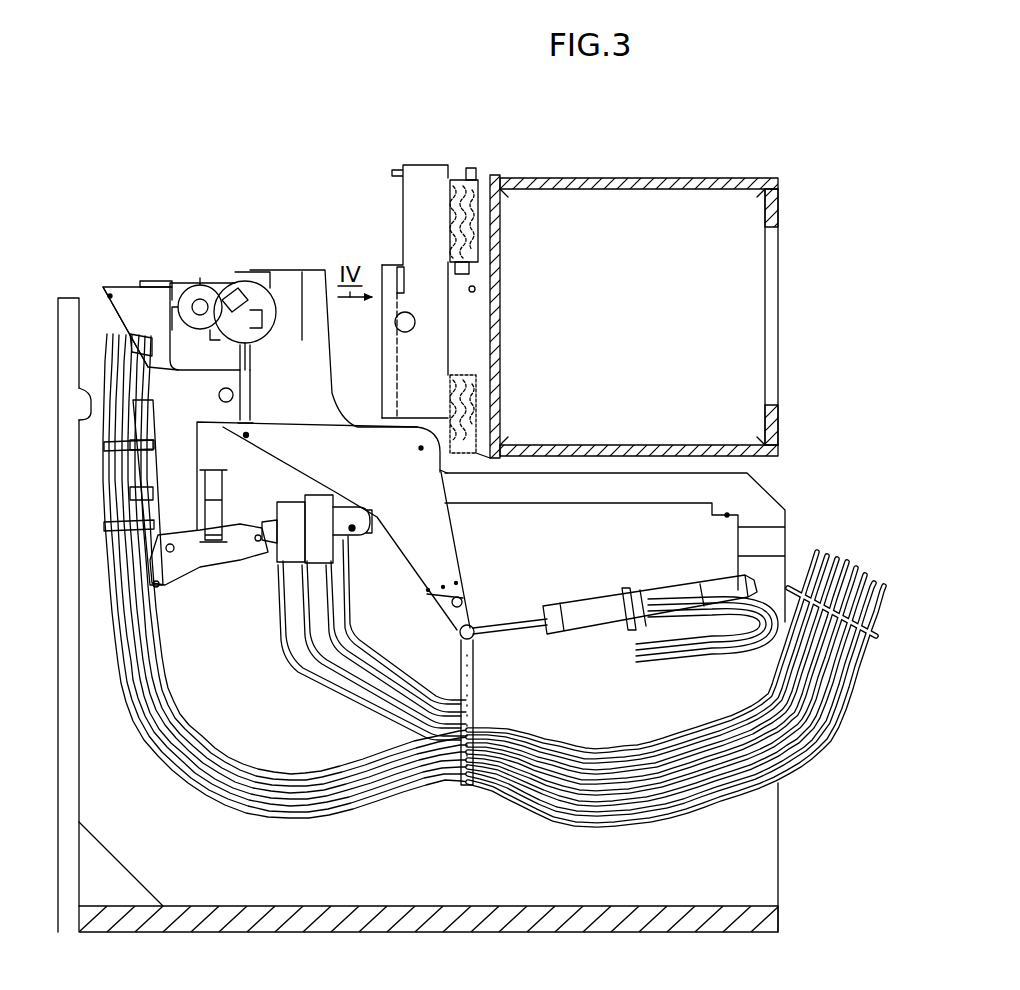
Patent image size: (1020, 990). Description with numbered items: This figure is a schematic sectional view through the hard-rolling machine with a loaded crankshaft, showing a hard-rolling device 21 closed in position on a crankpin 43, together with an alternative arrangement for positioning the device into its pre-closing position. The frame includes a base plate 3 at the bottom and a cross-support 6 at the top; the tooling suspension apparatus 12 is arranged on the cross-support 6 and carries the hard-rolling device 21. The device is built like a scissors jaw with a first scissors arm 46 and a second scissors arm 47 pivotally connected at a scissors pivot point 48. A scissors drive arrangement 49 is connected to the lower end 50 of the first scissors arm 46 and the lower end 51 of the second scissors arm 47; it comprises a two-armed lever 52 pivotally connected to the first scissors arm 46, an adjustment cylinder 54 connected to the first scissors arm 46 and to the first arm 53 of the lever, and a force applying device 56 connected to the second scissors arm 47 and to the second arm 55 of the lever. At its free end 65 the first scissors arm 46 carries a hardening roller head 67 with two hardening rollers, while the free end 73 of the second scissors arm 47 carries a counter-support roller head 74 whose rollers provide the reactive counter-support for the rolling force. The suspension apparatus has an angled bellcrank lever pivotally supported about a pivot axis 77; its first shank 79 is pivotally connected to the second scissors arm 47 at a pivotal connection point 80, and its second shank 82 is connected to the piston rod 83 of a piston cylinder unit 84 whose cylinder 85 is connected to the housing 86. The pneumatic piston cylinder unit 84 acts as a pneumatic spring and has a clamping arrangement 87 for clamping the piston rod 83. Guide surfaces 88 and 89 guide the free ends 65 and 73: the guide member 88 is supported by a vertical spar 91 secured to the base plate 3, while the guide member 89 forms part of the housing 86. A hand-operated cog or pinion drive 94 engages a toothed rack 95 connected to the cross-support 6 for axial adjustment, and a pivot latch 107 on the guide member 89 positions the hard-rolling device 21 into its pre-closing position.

The base plate 3 is at (569, 926).
The cross-support 6 is at (788, 224).
The tooling suspension apparatus 12 is at (428, 146).
The hard-rolling device 21 is at (98, 284).
The crankpin 43 is at (216, 293).
The first scissors arm 46 is at (130, 279).
The second scissors arm 47 is at (300, 264).
The scissors pivot point 48 is at (221, 401).
The scissors drive arrangement 49 is at (265, 572).
The lower end of first scissors arm 50 is at (235, 506).
The lower end of second scissors arm 51 is at (360, 550).
The two-armed lever 52 is at (200, 584).
The first arm of two-armed lever 53 is at (166, 584).
The adjustment cylinder 54 is at (150, 462).
The second arm of two-armed lever 55 is at (226, 576).
The force applying device 56 is at (336, 564).
The free end of first scissors arm 65 is at (118, 286).
The hardening roller head 67 is at (176, 281).
The free end of second scissors arm 73 is at (312, 290).
The counter-support roller head 74 is at (251, 266).
The pivot axis 77 is at (420, 450).
The first shank 79 is at (324, 440).
The pivotal connection point 80 is at (249, 437).
The second shank 82 is at (458, 568).
The piston rod 83 is at (520, 635).
The piston cylinder unit 84 is at (612, 642).
The cylinder 85 is at (696, 605).
The housing 86 is at (792, 490).
The clamping arrangement 87 is at (634, 627).
The guide surface 88 is at (89, 420).
The guide surface 89 is at (386, 362).
The vertical spar 91 is at (64, 716).
The cog or pinion drive 94 is at (468, 160).
The toothed rack 95 is at (478, 178).
The pivot latch 107 is at (377, 301).